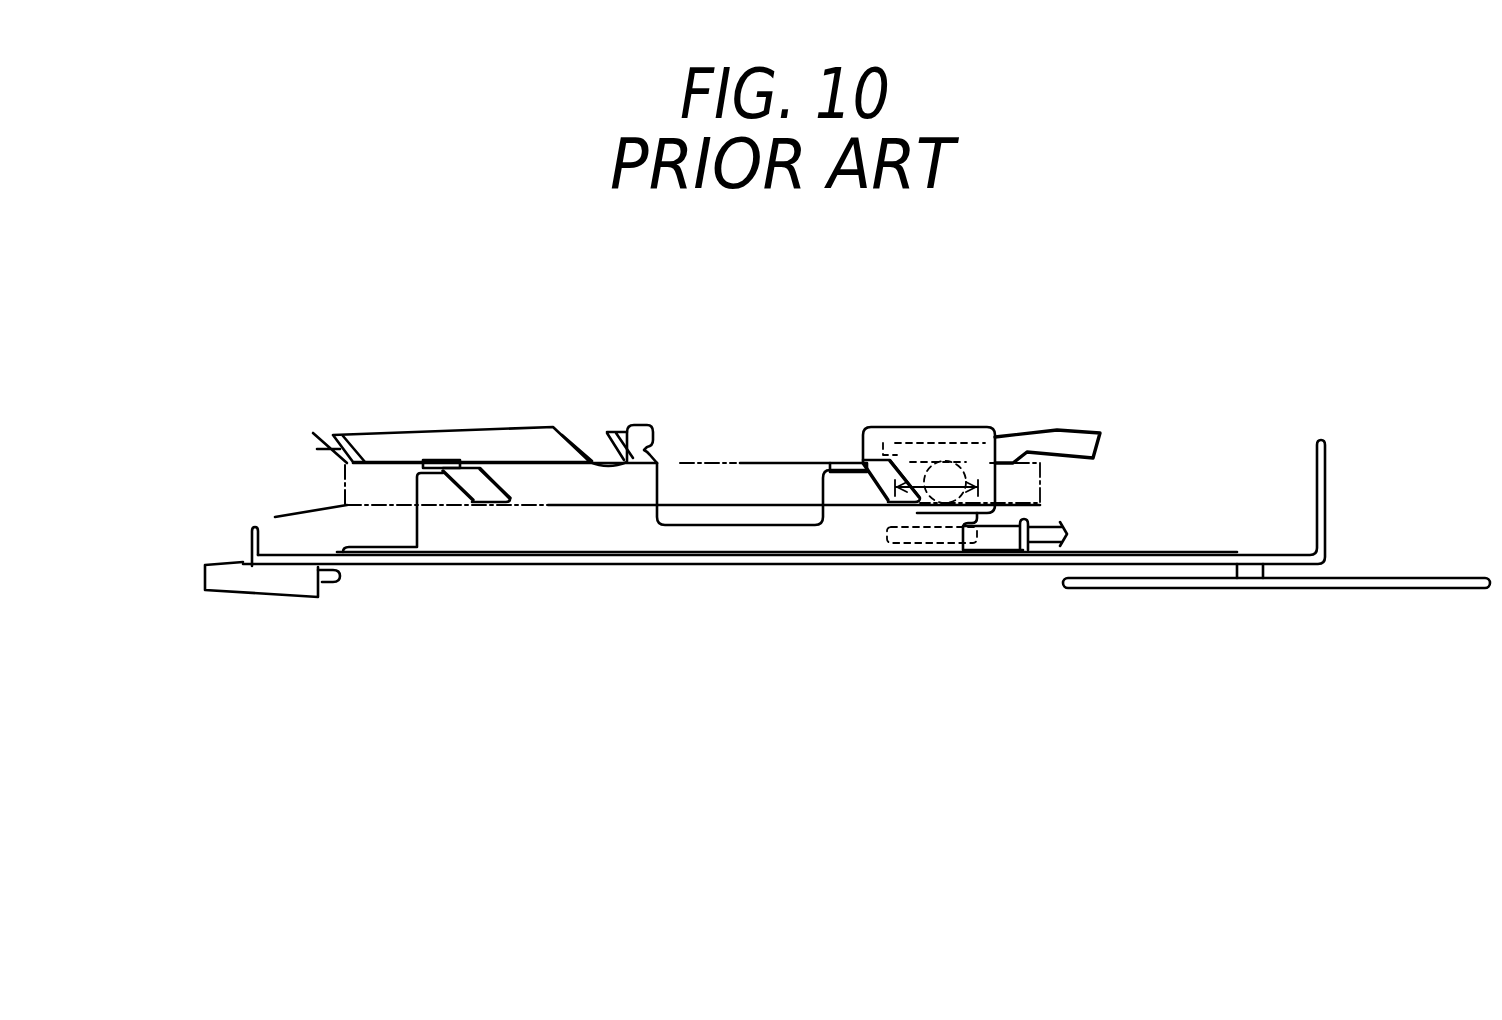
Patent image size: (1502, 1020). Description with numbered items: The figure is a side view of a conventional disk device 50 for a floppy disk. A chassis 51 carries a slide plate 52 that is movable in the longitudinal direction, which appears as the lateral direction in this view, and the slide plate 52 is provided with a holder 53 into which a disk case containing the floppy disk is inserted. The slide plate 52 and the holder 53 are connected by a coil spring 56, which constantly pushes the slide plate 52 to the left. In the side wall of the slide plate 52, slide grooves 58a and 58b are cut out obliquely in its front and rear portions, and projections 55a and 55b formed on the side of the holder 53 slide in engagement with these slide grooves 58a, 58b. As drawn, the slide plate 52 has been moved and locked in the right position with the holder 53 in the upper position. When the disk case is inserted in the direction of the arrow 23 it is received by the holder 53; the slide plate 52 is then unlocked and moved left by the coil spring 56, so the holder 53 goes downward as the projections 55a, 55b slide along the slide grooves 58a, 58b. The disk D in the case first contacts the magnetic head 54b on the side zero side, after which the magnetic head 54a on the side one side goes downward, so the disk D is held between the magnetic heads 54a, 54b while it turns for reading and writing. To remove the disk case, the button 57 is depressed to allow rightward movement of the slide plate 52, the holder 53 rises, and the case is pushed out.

The disk device 50 is at (1092, 368).
The arrow 23 is at (308, 484).
The coil spring 56 is at (388, 433).
The projection 55a is at (434, 462).
The holder 53 is at (693, 462).
The projection 55b is at (858, 462).
The disk D is at (913, 486).
The magnetic head 54a is at (950, 445).
The magnetic head 54b is at (937, 545).
The slide groove 58a is at (453, 498).
The slide groove 58b is at (860, 502).
The slide plate 52 is at (602, 533).
The button 57 is at (263, 588).
The chassis 51 is at (1030, 566).